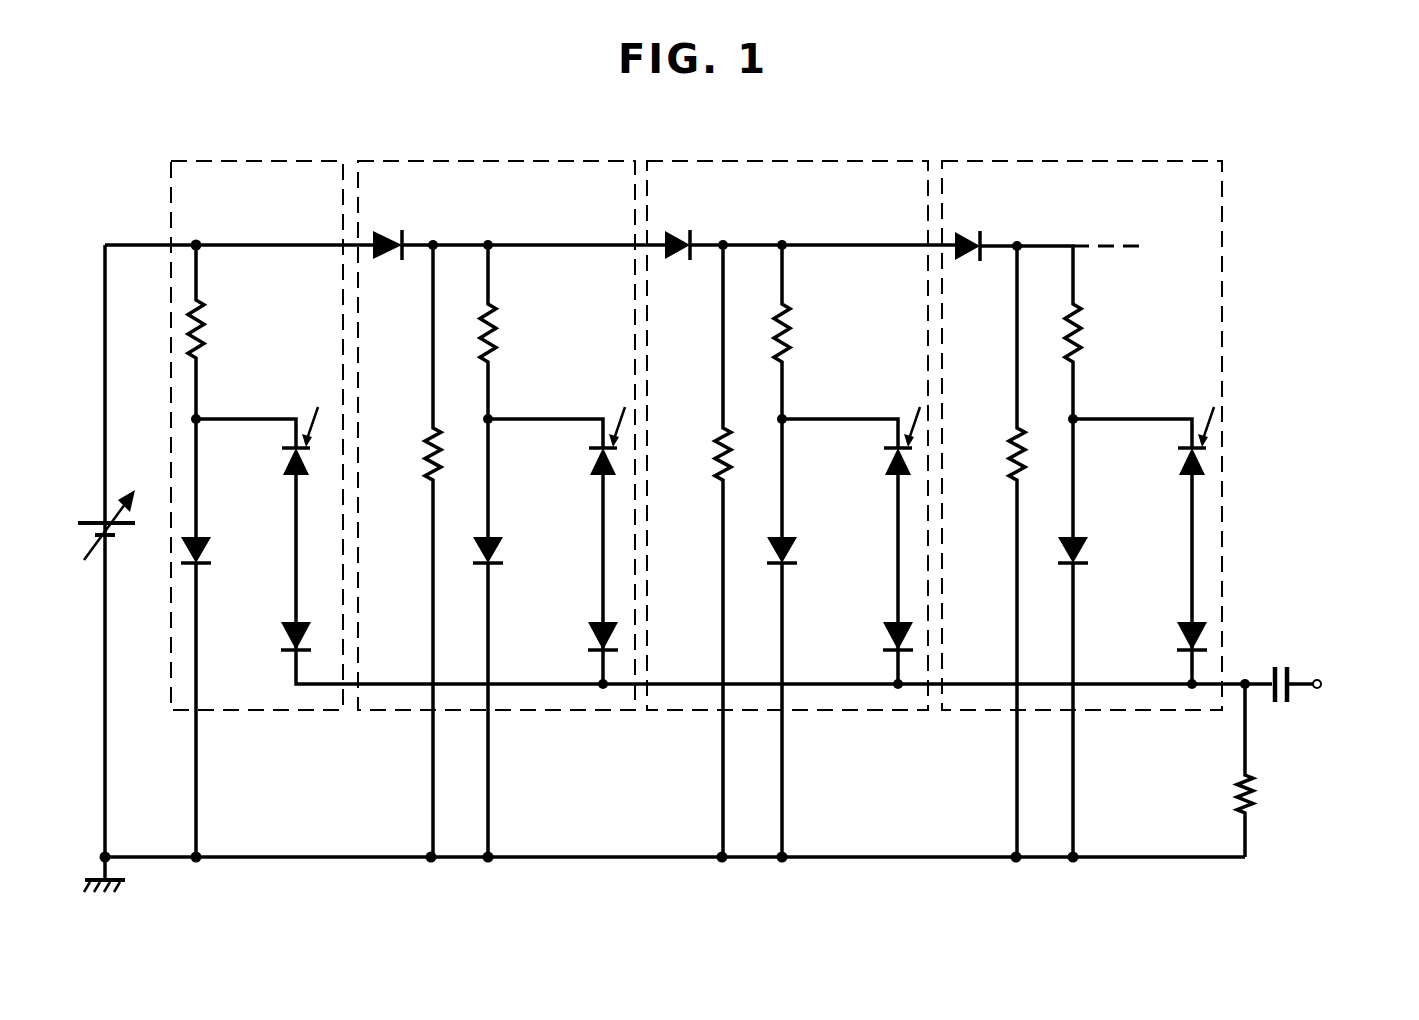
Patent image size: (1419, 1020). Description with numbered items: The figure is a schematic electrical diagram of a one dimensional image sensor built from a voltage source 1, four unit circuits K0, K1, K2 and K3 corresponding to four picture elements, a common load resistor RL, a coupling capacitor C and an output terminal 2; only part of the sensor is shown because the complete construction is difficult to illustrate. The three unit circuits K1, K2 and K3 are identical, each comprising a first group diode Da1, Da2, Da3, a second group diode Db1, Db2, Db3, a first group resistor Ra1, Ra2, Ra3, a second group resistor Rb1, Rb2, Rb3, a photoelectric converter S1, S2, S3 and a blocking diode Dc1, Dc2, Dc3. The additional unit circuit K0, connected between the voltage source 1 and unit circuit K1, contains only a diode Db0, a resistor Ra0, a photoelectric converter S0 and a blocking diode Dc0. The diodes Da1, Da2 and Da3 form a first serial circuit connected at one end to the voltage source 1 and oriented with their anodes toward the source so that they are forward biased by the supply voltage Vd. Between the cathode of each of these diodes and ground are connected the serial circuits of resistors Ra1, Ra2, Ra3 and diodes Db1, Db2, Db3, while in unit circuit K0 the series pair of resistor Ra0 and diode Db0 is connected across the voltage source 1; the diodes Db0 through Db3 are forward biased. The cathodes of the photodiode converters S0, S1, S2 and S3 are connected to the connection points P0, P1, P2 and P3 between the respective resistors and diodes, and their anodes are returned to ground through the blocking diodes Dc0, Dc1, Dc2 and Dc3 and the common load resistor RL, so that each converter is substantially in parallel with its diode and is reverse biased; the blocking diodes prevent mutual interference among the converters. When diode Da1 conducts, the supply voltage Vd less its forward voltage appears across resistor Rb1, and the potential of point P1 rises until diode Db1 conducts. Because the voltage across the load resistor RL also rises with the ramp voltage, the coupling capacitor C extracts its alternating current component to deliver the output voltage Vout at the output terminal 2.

The additional unit circuit K0 is at (246, 158).
The unit circuit K1 is at (475, 158).
The unit circuit K2 is at (747, 158).
The unit circuit K3 is at (1045, 158).
The first group diode Da1 is at (393, 228).
The first group diode Da2 is at (683, 228).
The first group diode Da3 is at (973, 229).
The resistor Ra0 is at (206, 334).
The first group resistor Ra1 is at (498, 336).
The first group resistor Ra2 is at (792, 336).
The first group resistor Ra3 is at (1083, 336).
The second group resistor Rb1 is at (423, 434).
The second group resistor Rb2 is at (713, 434).
The second group resistor Rb3 is at (1007, 434).
The connection point P0 is at (200, 415).
The connection point P1 is at (492, 415).
The connection point P2 is at (786, 415).
The connection point P3 is at (1077, 415).
The photoelectric converter S0 is at (282, 462).
The photoelectric converter S1 is at (589, 462).
The photoelectric converter S2 is at (884, 462).
The photoelectric converter S3 is at (1178, 462).
The diode Db0 is at (208, 548).
The second group diode Db1 is at (500, 548).
The second group diode Db2 is at (794, 548).
The second group diode Db3 is at (1085, 548).
The blocking diode Dc0 is at (285, 638).
The blocking diode Dc1 is at (592, 638).
The blocking diode Dc2 is at (885, 638).
The blocking diode Dc3 is at (1177, 638).
The voltage source 1 is at (100, 522).
The supply voltage Vd is at (138, 479).
The coupling capacitor C is at (1265, 680).
The output terminal 2 is at (1318, 680).
The output voltage Vout is at (1330, 719).
The load resistor RL is at (1253, 792).